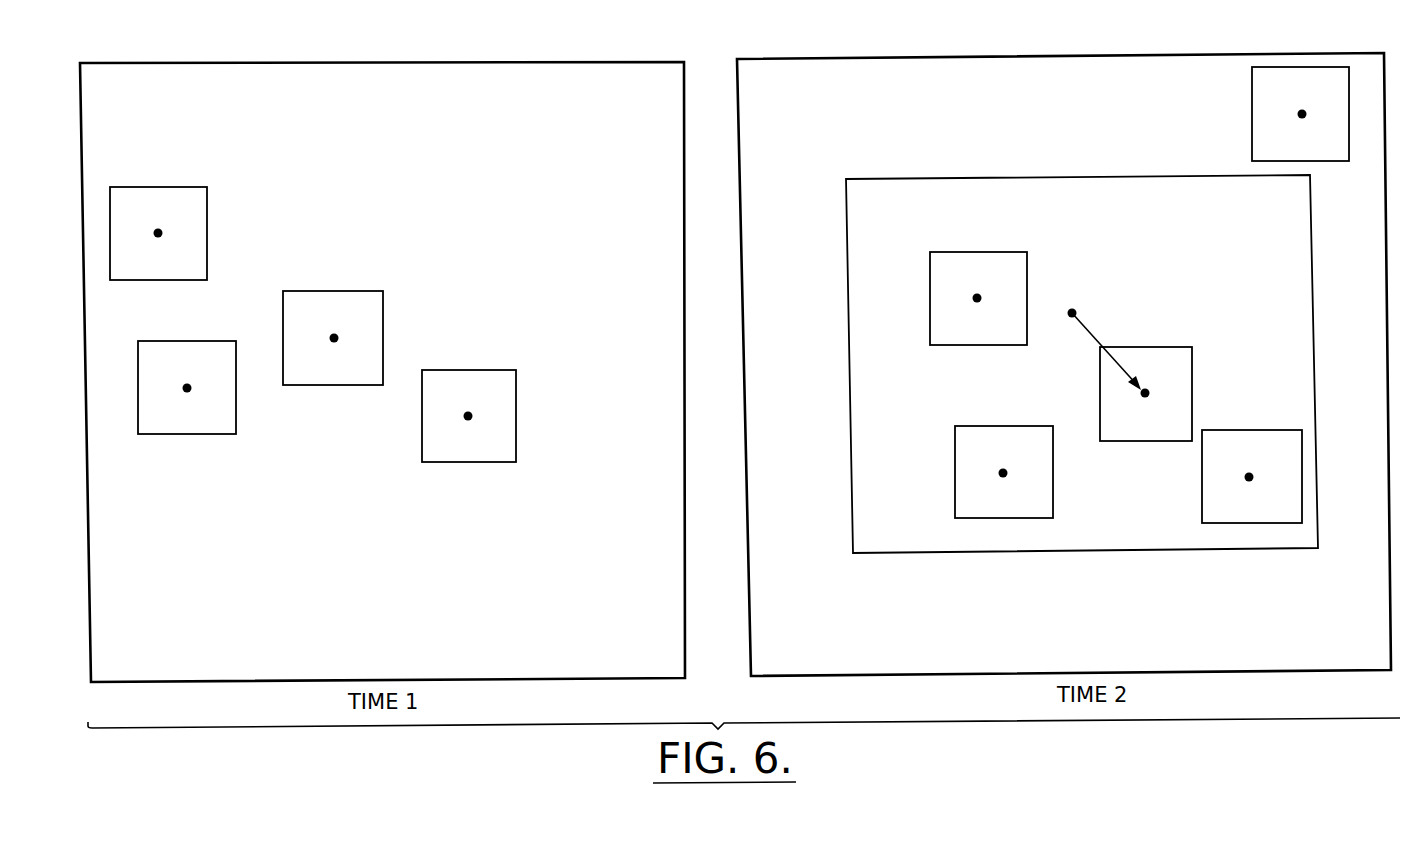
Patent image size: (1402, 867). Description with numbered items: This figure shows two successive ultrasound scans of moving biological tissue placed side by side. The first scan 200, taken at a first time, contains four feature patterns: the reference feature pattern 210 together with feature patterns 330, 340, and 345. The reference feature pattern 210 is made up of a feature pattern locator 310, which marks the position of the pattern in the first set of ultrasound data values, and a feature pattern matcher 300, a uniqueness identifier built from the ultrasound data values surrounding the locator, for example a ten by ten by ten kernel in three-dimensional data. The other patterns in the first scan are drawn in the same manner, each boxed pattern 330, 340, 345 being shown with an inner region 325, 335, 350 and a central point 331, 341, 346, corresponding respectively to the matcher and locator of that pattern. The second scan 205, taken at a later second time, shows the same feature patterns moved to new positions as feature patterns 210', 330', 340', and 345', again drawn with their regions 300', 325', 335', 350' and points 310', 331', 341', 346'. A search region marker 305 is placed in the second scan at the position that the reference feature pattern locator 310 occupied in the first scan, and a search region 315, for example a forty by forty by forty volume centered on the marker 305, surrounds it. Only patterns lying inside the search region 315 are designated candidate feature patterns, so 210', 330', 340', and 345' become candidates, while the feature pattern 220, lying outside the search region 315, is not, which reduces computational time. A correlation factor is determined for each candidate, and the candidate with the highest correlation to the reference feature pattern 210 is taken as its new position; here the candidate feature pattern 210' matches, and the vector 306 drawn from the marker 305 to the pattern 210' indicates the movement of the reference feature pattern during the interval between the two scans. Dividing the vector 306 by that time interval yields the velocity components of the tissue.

The scan 200 is at (412, 63).
The scan 205 is at (1023, 54).
The reference feature pattern 210 is at (362, 338).
The candidate feature pattern 210' is at (1179, 394).
The feature pattern 220 is at (1251, 113).
The feature pattern matcher 300 is at (333, 324).
The object region at time 2 300' is at (1146, 380).
The search region marker 305 is at (1072, 313).
The vector 306 is at (1093, 333).
The feature pattern locator 310 is at (380, 303).
The object centroid at time 2 310' is at (1192, 357).
The search region 315 is at (1068, 177).
The object region 325 is at (158, 220).
The object region at time 2 325' is at (978, 285).
The feature pattern 330 is at (188, 233).
The candidate feature pattern 330' is at (1011, 298).
The object centroid 331 is at (203, 199).
The object centroid at time 2 331' is at (1026, 264).
The object region 335 is at (187, 374).
The object region at time 2 335' is at (1004, 450).
The feature pattern 340 is at (216, 387).
The candidate feature pattern 340' is at (1038, 472).
The object centroid 341 is at (232, 353).
The object centroid at time 2 341' is at (1045, 438).
The feature pattern 345 is at (498, 416).
The candidate feature pattern 345' is at (1292, 476).
The object centroid 346 is at (513, 382).
The object centroid at time 2 346' is at (1310, 437).
The object region 350 is at (469, 403).
The object region at time 2 350' is at (1252, 463).